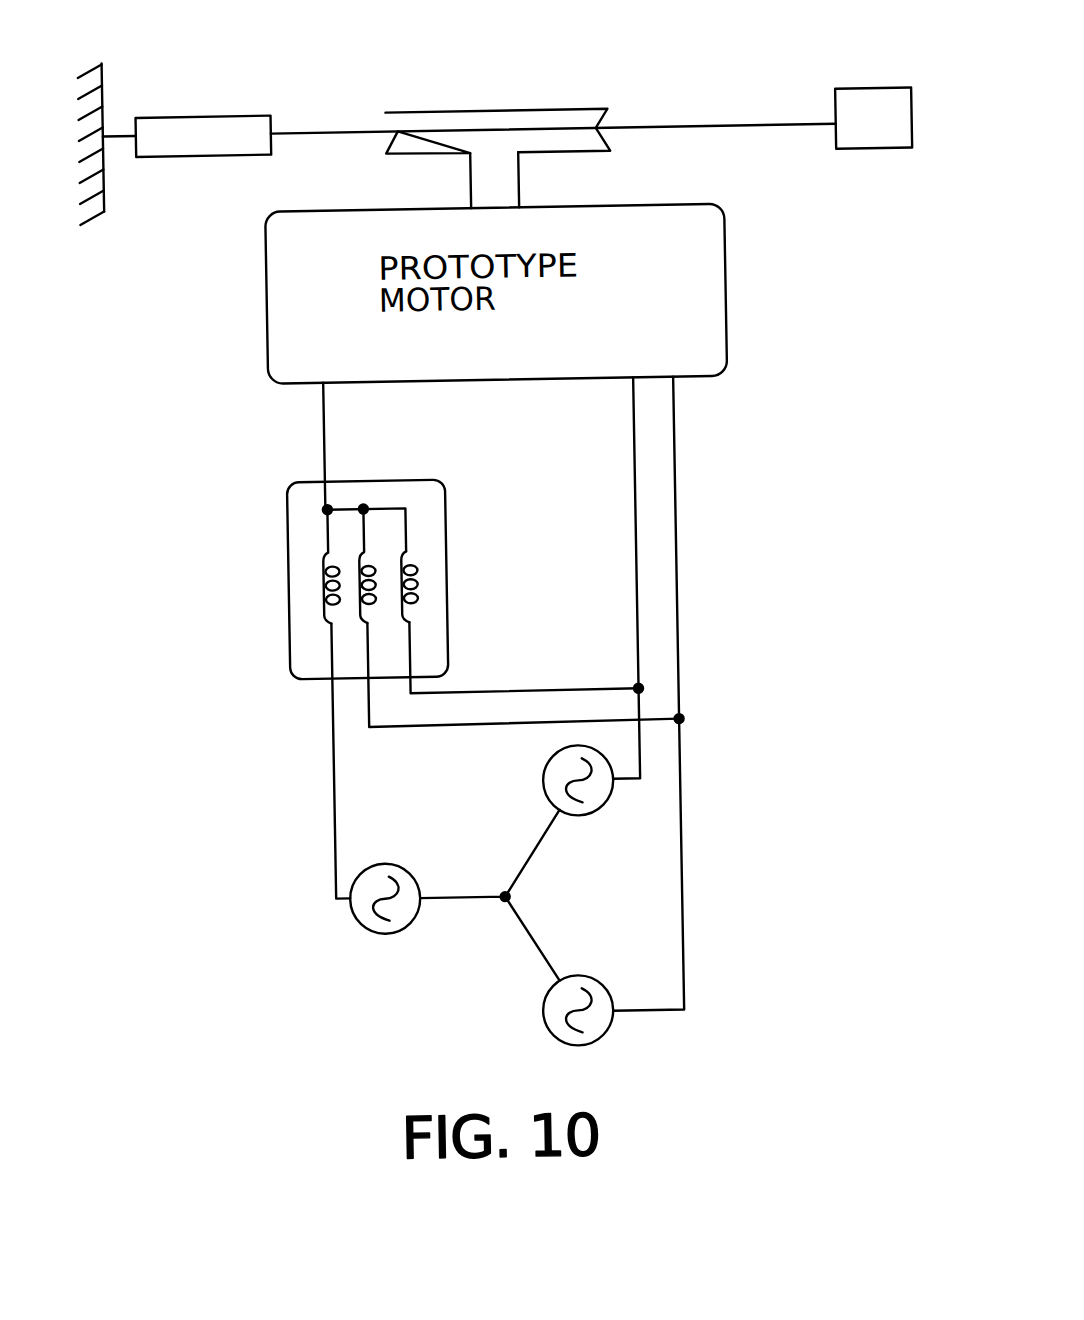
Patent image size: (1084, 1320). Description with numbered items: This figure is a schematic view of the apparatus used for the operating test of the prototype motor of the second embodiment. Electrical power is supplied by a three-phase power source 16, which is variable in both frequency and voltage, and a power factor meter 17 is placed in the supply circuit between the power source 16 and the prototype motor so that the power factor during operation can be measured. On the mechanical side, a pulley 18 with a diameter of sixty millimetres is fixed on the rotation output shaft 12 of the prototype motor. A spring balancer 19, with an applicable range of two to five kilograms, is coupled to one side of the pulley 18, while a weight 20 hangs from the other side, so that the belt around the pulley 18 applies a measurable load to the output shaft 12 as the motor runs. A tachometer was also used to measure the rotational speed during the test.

The rotation output shaft 12 is at (512, 172).
The three-phase power source 16 is at (471, 934).
The power factor meter 17 is at (291, 604).
The pulley 18 is at (446, 108).
The spring balancer 19 is at (238, 112).
The weight 20 is at (879, 94).